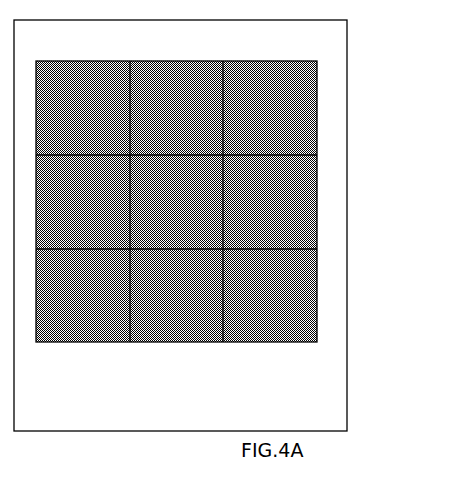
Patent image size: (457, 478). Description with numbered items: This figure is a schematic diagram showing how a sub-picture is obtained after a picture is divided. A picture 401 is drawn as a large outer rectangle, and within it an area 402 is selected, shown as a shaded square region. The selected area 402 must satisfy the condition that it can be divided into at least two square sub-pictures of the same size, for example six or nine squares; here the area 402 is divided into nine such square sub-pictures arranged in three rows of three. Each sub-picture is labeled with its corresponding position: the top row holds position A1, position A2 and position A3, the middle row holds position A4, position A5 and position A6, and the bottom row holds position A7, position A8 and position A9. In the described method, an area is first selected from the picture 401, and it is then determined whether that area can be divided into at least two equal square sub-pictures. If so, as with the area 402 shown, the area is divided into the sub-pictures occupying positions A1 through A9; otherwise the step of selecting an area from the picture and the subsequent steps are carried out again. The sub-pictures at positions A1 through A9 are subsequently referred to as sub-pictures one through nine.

The picture 401 is at (348, 118).
The area 402 is at (241, 201).
The position A1 is at (83, 108).
The position A2 is at (176, 108).
The position A3 is at (270, 108).
The position A4 is at (83, 202).
The position A5 is at (176, 202).
The position A6 is at (270, 202).
The position A7 is at (83, 295).
The position A8 is at (176, 295).
The position A9 is at (270, 295).